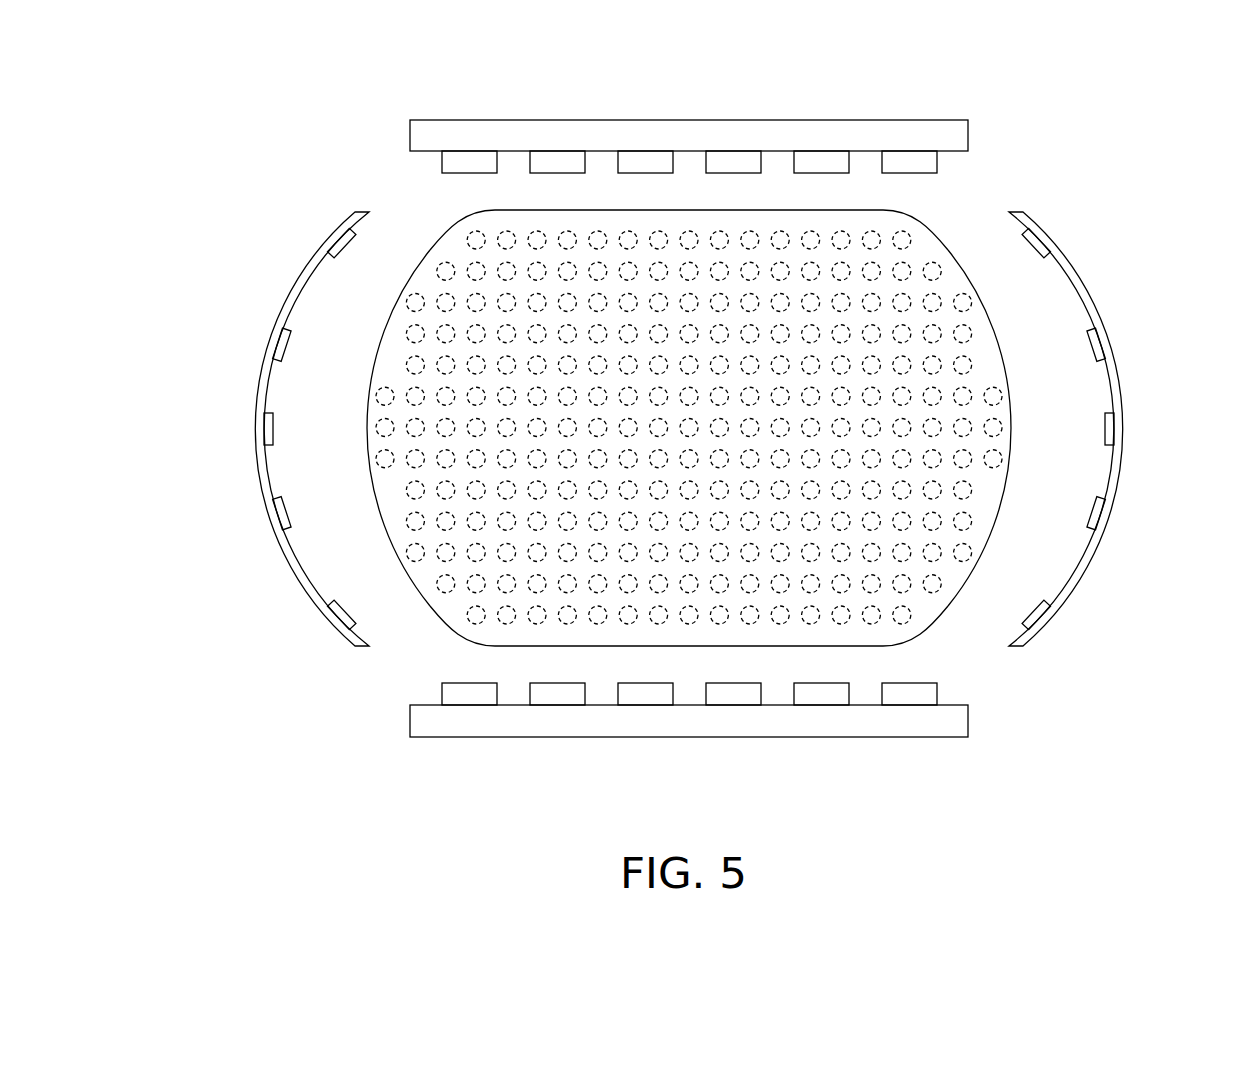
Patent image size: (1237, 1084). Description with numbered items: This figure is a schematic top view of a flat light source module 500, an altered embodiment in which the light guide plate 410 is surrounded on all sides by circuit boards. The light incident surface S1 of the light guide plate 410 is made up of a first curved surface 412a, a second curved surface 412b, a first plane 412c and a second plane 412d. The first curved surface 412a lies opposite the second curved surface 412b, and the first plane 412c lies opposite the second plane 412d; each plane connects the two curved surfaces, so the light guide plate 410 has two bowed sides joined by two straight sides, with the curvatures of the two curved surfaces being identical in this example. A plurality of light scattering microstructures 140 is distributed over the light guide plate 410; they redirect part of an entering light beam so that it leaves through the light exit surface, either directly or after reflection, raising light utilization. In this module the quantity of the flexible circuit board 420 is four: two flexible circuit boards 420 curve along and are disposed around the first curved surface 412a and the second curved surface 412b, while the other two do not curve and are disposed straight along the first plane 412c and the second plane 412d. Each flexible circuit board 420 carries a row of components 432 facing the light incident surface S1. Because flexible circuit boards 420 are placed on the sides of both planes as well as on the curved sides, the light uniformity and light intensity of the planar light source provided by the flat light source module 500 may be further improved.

The flat light source module 500 is at (1081, 794).
The light guide plate 410 is at (689, 429).
The first curved surface 412a is at (432, 250).
The second curved surface 412b is at (950, 252).
The first plane 412c is at (862, 210).
The second plane 412d is at (867, 645).
The light scattering microstructures 140 is at (473, 240).
The flexible circuit board 420 is at (689, 429).
The electronic component 432 is at (729, 671).
The light incident surface S1 is at (600, 646).